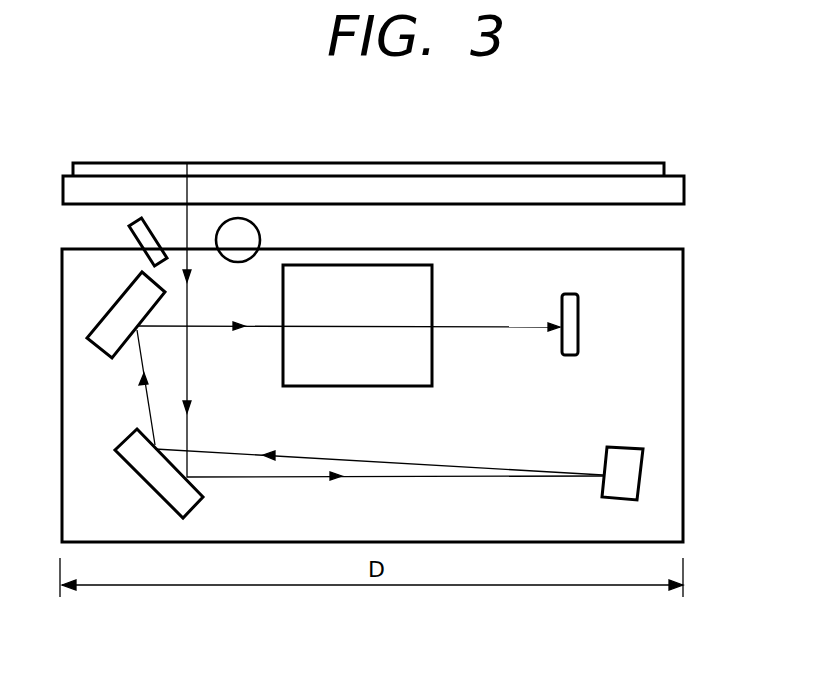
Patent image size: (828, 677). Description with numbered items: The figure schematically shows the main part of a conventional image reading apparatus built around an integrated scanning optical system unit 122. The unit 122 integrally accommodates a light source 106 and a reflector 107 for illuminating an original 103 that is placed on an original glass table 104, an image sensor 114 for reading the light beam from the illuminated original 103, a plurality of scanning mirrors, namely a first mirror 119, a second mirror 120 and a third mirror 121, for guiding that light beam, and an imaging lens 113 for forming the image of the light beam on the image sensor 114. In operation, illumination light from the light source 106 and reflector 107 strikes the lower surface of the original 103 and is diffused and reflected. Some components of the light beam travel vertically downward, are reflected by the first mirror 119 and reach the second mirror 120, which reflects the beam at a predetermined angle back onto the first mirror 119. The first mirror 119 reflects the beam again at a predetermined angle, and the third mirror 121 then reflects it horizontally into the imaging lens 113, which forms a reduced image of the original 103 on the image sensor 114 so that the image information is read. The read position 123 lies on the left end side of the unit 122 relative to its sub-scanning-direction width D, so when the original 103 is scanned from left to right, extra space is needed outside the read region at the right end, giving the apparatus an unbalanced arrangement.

The original 103 is at (536, 168).
The original glass table 104 is at (672, 186).
The light source 106 is at (258, 238).
The reflector 107 is at (146, 240).
The imaging lens 113 is at (418, 358).
The image sensor 114 is at (575, 335).
The first mirror 119 is at (155, 478).
The second mirror 120 is at (613, 483).
The third mirror 121 is at (105, 342).
The integrated scanning optical system unit 122 is at (683, 487).
The read position 123 is at (192, 163).